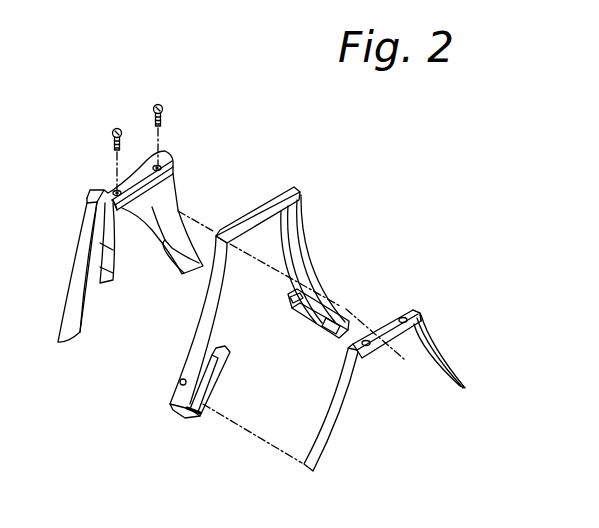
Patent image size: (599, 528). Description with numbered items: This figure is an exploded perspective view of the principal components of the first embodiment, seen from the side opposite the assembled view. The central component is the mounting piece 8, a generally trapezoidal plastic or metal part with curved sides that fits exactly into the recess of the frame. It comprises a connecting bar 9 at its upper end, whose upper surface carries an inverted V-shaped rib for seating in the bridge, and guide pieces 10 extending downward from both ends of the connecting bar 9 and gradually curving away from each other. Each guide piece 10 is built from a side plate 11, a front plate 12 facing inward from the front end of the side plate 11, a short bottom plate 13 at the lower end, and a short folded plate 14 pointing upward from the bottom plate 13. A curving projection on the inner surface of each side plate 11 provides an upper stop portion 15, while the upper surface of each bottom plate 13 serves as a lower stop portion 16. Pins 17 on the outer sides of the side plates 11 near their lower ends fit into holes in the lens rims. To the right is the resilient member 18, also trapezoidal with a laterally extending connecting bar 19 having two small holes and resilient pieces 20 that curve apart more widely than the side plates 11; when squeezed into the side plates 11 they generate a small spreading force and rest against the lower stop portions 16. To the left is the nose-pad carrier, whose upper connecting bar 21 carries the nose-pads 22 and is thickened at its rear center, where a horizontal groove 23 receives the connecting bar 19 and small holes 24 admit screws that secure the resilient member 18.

The mounting piece 8 is at (303, 193).
The connecting bar 9 is at (292, 189).
The guide pieces 10 is at (307, 219).
The side plates 11 is at (305, 240).
The front plates 12 is at (293, 265).
The bottom plates 13 is at (345, 337).
The folded plates 14 is at (300, 311).
The upper stop portions 15 is at (292, 293).
The lower stop portions 16 is at (338, 326).
The pins 17 is at (181, 383).
The resilient member 18 is at (418, 311).
The connecting bar 19 is at (393, 323).
The resilient pieces 20 is at (437, 347).
The connecting bar 21 is at (114, 192).
The nose-pads 22 is at (80, 327).
The groove 23 is at (108, 208).
The small holes 24 is at (93, 188).